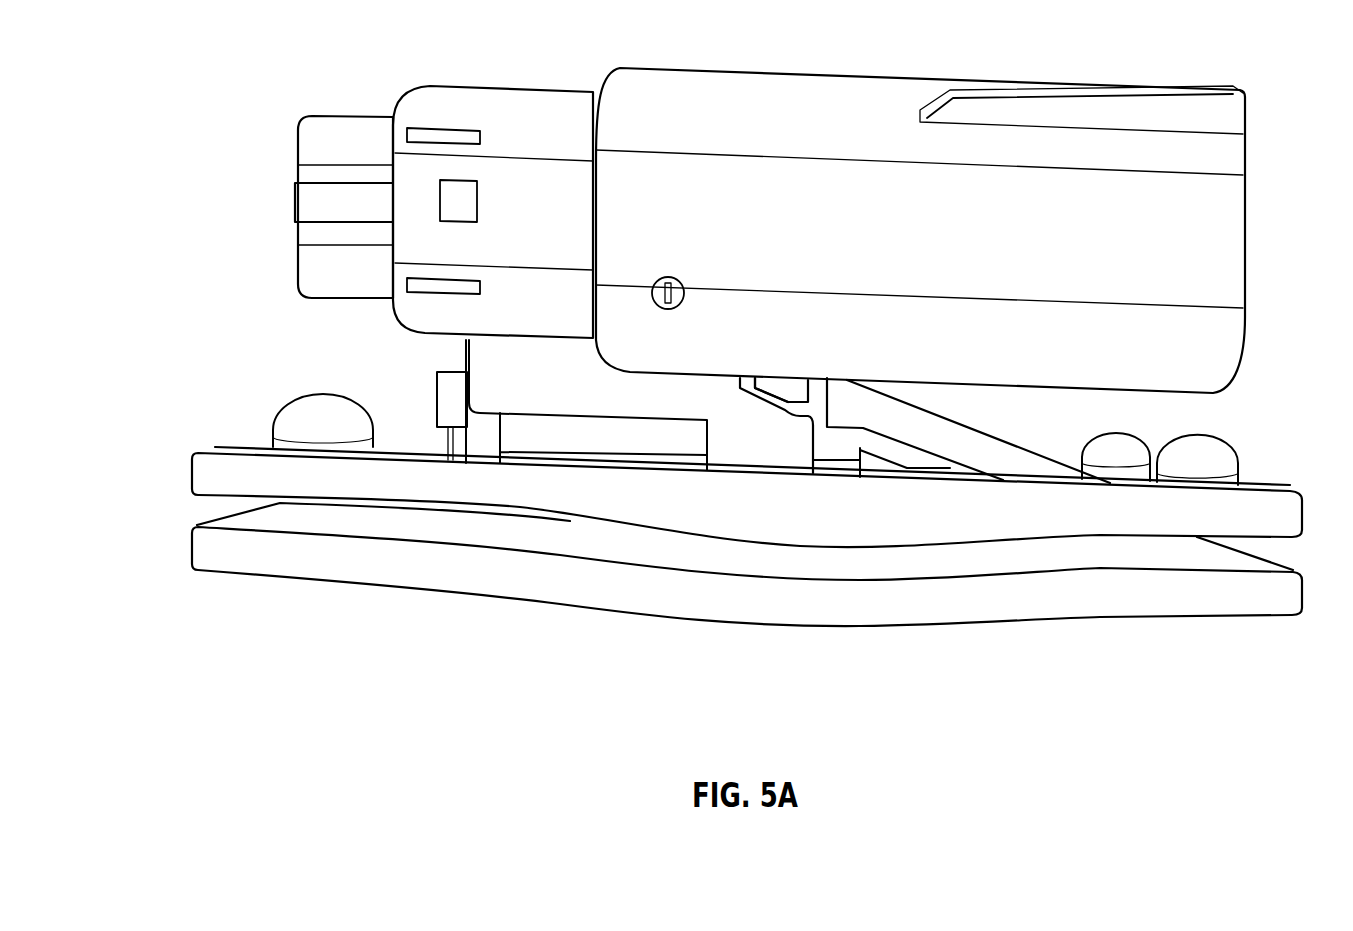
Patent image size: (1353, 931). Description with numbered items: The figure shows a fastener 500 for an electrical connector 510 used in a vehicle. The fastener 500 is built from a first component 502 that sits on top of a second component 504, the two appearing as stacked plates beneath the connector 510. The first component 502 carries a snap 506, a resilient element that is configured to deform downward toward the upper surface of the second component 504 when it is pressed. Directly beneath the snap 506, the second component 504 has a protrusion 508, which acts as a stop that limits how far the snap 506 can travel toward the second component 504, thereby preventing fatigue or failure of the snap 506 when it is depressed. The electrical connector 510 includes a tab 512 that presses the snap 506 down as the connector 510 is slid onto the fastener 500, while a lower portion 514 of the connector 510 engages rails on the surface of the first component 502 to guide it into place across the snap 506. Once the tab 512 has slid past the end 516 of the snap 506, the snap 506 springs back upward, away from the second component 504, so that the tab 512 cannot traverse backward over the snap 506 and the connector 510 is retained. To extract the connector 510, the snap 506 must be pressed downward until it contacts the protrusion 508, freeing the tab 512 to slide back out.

The fastener 500 is at (701, 379).
The first component 502 is at (190, 475).
The second component 504 is at (190, 550).
The snap 506 is at (1000, 437).
The protrusion 508 is at (873, 468).
The electrical connector 510 is at (410, 92).
The tab 512 is at (782, 393).
The lower portion 514 is at (597, 393).
The end of the snap 516 is at (802, 395).